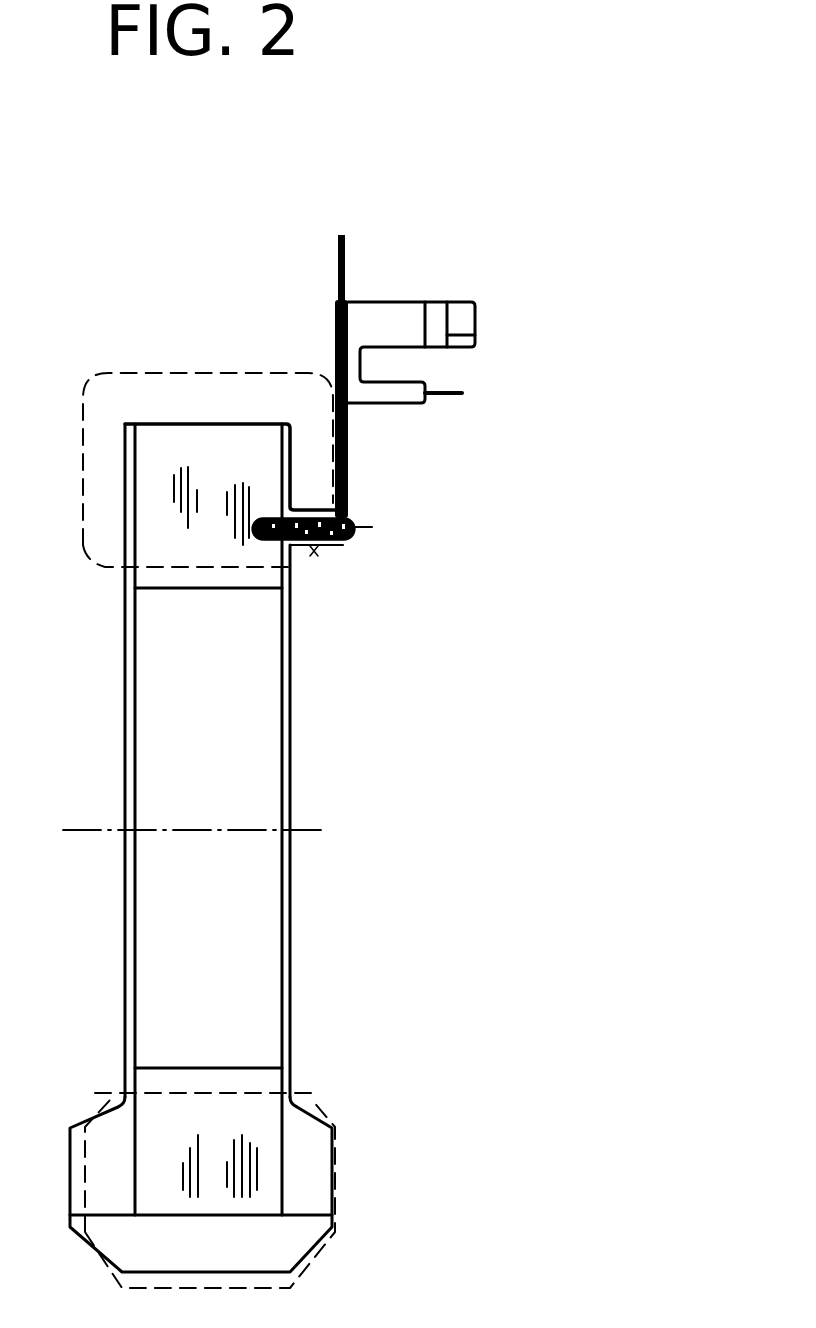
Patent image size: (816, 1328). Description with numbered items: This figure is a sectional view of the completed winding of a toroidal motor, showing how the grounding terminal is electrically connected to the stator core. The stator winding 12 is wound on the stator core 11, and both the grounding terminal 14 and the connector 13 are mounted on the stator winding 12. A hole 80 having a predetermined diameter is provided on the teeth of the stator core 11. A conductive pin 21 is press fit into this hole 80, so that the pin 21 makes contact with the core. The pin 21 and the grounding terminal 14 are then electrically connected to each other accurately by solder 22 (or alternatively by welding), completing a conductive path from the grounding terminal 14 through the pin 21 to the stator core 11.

The stator core 11 is at (222, 458).
The stator winding 12 is at (134, 382).
The connector 13 is at (485, 337).
The grounding terminal 14 is at (352, 460).
The pin 21 is at (317, 547).
The solder 22 is at (352, 538).
The hole 80 is at (293, 543).